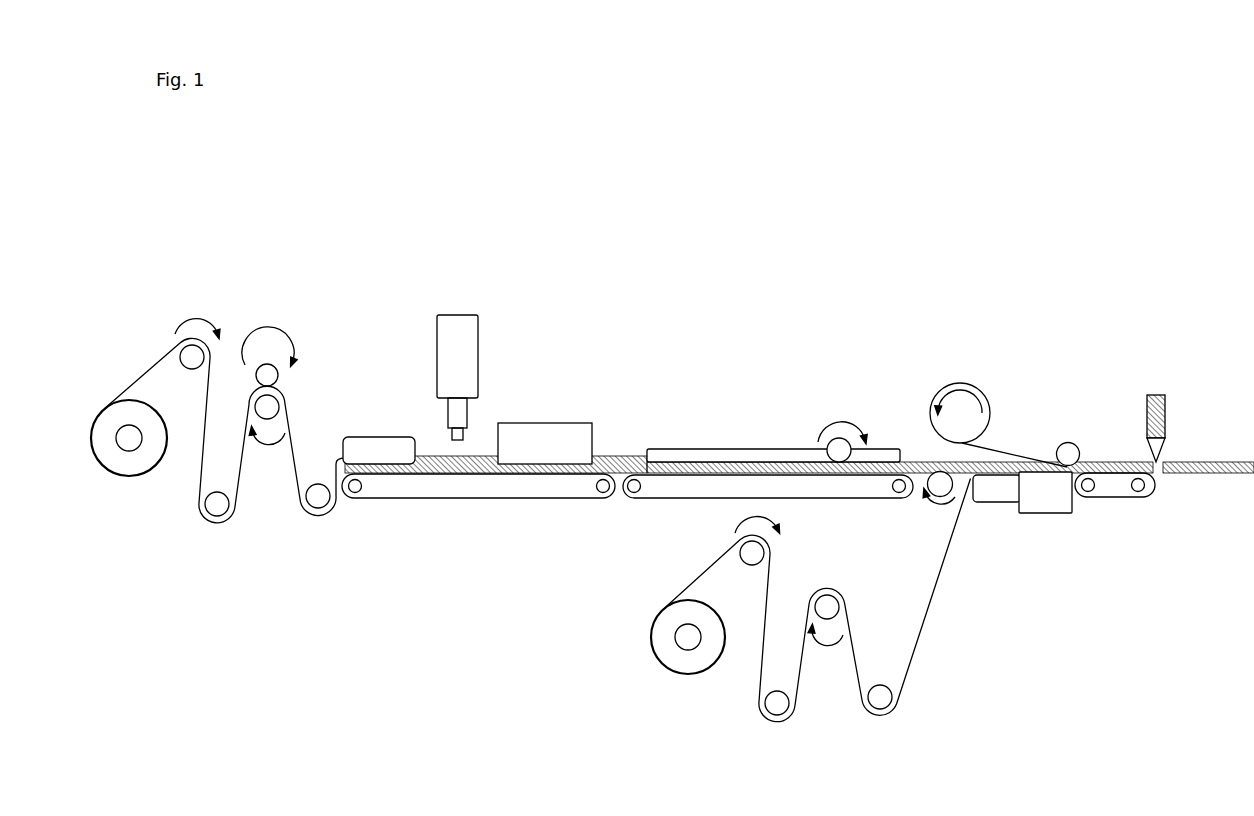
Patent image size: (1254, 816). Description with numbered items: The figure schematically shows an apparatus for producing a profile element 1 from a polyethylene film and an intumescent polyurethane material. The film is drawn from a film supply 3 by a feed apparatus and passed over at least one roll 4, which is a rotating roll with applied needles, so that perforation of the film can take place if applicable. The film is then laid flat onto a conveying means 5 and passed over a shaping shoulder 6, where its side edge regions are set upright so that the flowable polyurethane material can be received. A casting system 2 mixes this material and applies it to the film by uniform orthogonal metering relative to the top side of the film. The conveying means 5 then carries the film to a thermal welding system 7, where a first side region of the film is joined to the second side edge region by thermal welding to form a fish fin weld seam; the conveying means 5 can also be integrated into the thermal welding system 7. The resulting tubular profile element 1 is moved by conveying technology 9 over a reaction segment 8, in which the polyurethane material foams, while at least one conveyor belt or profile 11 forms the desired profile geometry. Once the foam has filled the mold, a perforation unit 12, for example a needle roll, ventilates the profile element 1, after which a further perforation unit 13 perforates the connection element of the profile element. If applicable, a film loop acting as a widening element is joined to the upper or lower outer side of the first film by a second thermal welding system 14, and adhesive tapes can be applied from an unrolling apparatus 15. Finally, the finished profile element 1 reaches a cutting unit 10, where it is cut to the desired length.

The profile element 1 is at (1195, 468).
The casting system 2 is at (450, 342).
The film supply 3 is at (127, 462).
The roll 4 is at (266, 372).
The conveying means 5 is at (370, 488).
The shaping shoulder 6 is at (357, 445).
The thermal welding system 7 is at (555, 444).
The reaction segment 8 is at (620, 465).
The conveying technology 9 is at (660, 486).
The cutting unit 10 is at (1156, 420).
The conveyor belt or profile 11 is at (878, 452).
The perforation unit 12 is at (846, 440).
The perforation unit 13 is at (928, 493).
The second thermal welding system 14 is at (1002, 487).
The unrolling apparatus 15 is at (963, 413).